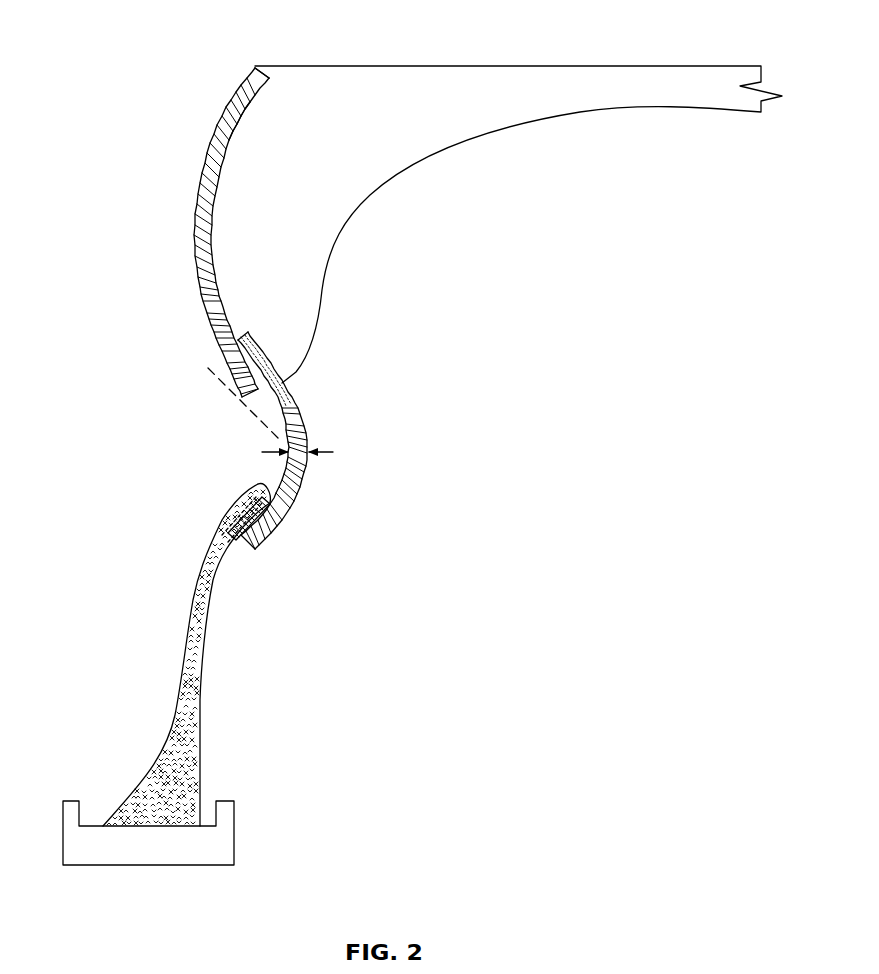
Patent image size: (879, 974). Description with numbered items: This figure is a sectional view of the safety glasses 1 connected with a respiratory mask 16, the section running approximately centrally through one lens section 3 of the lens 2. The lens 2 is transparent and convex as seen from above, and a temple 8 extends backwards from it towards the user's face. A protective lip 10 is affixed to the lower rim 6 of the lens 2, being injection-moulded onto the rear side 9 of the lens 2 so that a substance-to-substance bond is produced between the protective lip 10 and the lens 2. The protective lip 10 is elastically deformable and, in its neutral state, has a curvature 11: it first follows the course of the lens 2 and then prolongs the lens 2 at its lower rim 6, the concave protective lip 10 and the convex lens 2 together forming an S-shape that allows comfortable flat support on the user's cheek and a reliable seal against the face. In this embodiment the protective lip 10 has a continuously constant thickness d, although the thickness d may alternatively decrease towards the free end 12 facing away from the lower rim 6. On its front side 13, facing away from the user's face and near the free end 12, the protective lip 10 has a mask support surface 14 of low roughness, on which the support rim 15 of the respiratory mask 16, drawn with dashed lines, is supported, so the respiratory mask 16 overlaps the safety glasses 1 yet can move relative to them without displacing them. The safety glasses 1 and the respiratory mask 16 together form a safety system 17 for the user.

The safety glasses 1 is at (136, 57).
The lens 2 is at (245, 93).
The lens section 3 is at (206, 135).
The lower rim 6 is at (243, 400).
The temple 8 is at (596, 80).
The rear side 9 is at (222, 148).
The protective lip 10 is at (305, 472).
The curvature 11 is at (268, 444).
The free end 12 is at (166, 674).
The front side 13 is at (230, 512).
The mask support surface 14 is at (262, 489).
The support rim 15 is at (283, 535).
The respiratory mask 16 is at (150, 792).
The safety system 17 is at (166, 674).
The thickness d is at (333, 452).